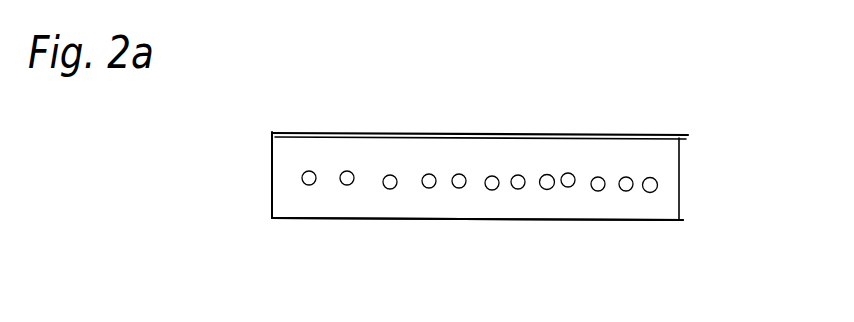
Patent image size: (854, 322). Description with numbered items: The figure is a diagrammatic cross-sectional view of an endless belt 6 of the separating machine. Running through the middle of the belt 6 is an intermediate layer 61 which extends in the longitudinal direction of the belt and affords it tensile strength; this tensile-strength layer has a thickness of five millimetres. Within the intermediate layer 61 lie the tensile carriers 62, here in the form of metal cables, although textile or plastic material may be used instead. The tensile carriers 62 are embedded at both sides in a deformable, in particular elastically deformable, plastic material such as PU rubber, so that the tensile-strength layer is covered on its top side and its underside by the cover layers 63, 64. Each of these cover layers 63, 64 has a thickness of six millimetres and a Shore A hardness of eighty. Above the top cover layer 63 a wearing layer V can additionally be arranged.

The belt 6 is at (551, 184).
The intermediate layer 61 is at (672, 188).
The tensile carrier 62 is at (654, 192).
The top-side cover layer 63 is at (642, 152).
The underside cover layer 64 is at (623, 213).
The wearing layer V is at (644, 136).